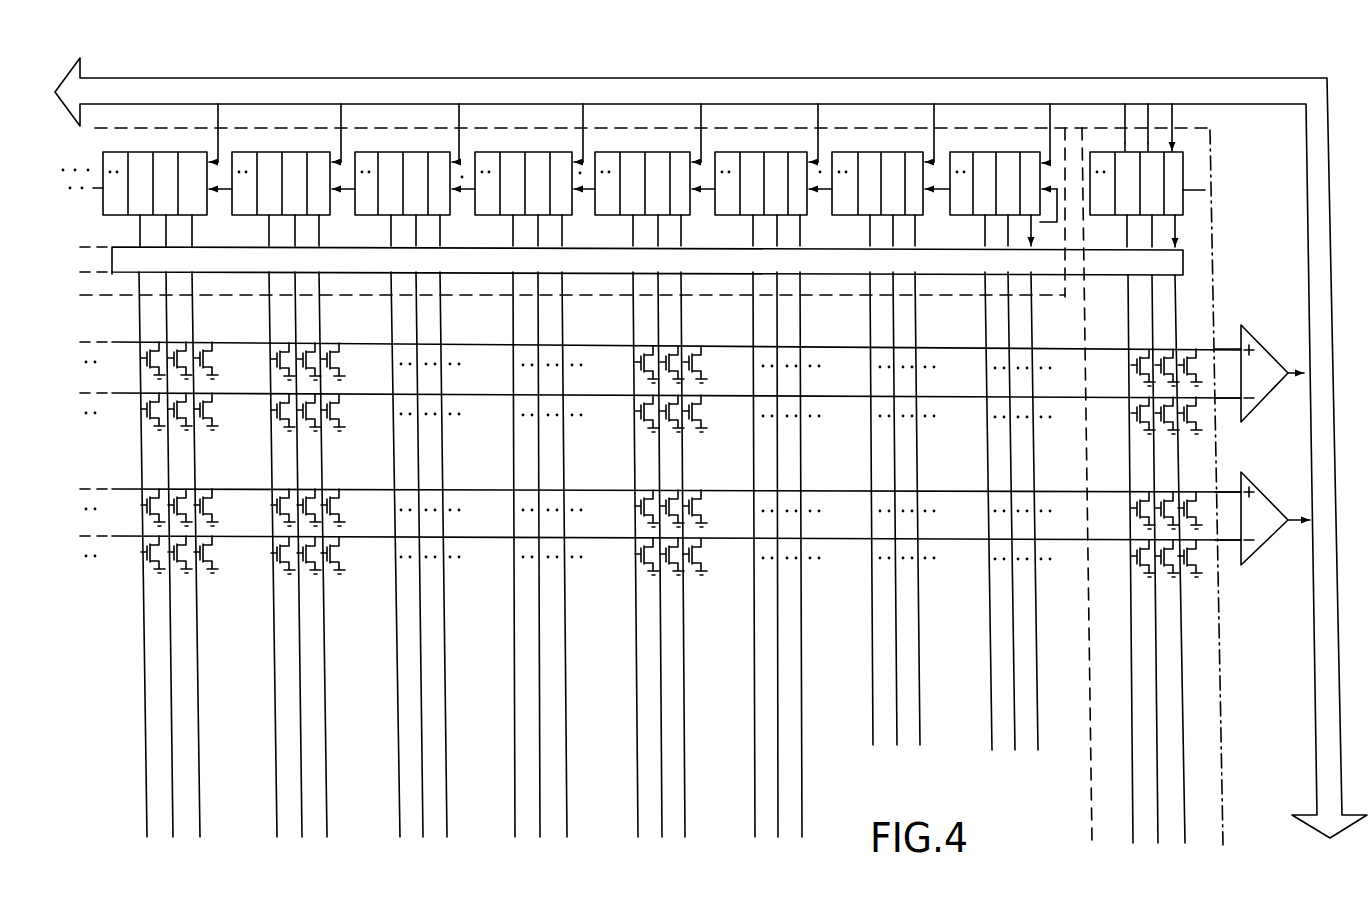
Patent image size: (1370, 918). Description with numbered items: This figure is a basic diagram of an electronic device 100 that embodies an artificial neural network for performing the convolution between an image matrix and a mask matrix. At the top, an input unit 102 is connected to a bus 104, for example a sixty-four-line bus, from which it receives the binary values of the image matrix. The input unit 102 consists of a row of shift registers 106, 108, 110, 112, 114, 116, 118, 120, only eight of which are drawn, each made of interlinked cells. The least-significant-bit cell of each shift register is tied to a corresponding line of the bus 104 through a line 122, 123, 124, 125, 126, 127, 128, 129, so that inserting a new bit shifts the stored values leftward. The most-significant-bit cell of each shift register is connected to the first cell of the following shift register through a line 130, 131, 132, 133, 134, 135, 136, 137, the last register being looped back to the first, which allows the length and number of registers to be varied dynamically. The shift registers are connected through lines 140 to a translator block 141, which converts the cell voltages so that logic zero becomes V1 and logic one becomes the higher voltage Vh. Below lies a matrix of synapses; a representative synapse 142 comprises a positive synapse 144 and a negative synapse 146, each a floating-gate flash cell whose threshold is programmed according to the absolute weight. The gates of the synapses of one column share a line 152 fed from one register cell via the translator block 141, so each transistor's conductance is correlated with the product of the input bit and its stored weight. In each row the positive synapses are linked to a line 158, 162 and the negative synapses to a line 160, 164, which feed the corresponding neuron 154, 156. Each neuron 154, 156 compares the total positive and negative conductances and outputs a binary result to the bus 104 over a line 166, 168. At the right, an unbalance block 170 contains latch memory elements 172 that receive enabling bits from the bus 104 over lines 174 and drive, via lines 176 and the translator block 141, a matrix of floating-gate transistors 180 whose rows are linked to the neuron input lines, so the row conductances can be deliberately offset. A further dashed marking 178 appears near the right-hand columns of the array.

The electronic device 100 is at (488, 832).
The input unit 102 is at (1064, 300).
The bus 104 is at (1210, 82).
The shift register 106 is at (1006, 152).
The shift register 108 is at (886, 152).
The shift register 110 is at (778, 152).
The shift register 112 is at (656, 152).
The shift register 114 is at (536, 152).
The shift register 116 is at (414, 152).
The shift register 118 is at (292, 152).
The shift register 120 is at (163, 152).
The line 122 is at (1058, 155).
The line 123 is at (933, 157).
The line 124 is at (825, 157).
The line 125 is at (705, 157).
The line 126 is at (583, 157).
The line 127 is at (465, 157).
The line 128 is at (343, 157).
The line 129 is at (221, 157).
The line 130 is at (1058, 220).
The line 131 is at (934, 192).
The line 132 is at (819, 192).
The line 133 is at (702, 192).
The line 134 is at (584, 192).
The line 135 is at (462, 192).
The line 136 is at (339, 192).
The line 137 is at (216, 192).
The lines 140 is at (136, 232).
The translator block 141 is at (1187, 262).
The synapse 142 is at (719, 352).
The positive synapse 144 is at (700, 356).
The negative synapse 146 is at (703, 416).
The line 152 is at (647, 554).
The neuron 154 is at (1269, 358).
The neuron 156 is at (1280, 530).
The line 158 is at (1228, 342).
The line 160 is at (1232, 408).
The line 162 is at (1252, 460).
The line 164 is at (1234, 564).
The line 166 is at (1286, 379).
The line 168 is at (1276, 484).
The unbalance block 170 is at (1211, 155).
The memory element 172 is at (1205, 190).
The lines 174 is at (1190, 122).
The lines 176 is at (1191, 229).
The column lines 178 is at (1124, 295).
The floating-gate field-effect transistors 180 is at (1121, 563).